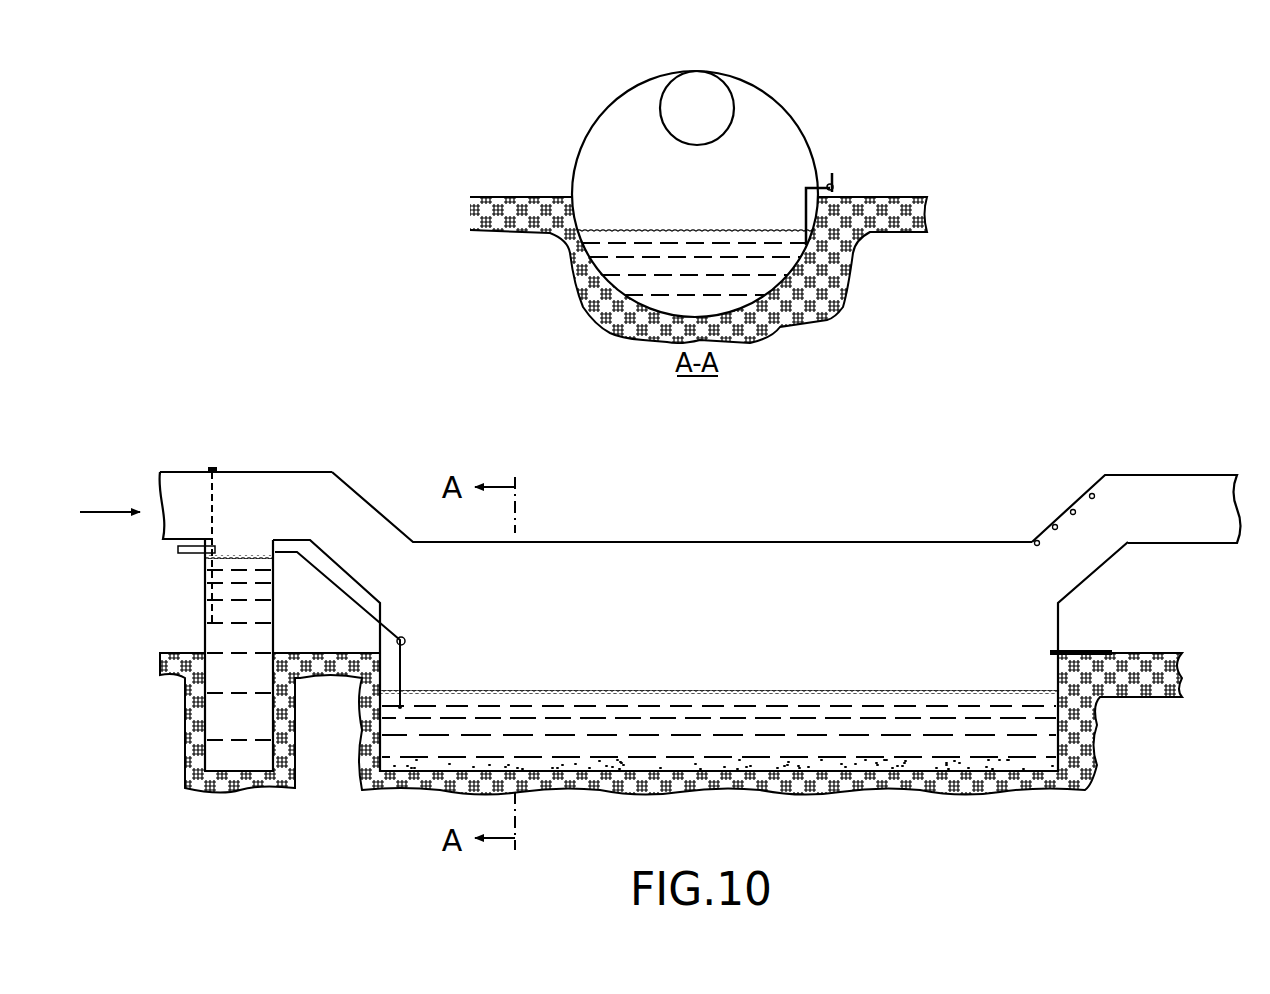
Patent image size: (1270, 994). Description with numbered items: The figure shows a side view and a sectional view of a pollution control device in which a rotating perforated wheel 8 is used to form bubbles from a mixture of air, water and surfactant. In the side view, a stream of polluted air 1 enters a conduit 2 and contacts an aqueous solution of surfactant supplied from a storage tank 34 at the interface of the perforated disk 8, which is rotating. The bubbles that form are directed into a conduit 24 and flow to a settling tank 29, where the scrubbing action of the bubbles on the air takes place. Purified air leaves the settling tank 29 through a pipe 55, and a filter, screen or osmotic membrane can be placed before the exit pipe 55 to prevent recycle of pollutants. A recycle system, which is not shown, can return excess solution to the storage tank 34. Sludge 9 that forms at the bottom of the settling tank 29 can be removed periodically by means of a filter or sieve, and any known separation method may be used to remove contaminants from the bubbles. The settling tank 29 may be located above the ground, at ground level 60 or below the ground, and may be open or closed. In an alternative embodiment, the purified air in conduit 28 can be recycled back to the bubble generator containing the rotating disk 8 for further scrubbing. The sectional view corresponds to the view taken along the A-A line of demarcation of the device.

The stream of polluted air 1 is at (100, 513).
The conduit 2 is at (186, 470).
The rotating perforated wheel 8 is at (217, 487).
The sludge 9 is at (717, 317).
The conduit 24 is at (682, 92).
The conduit 28 is at (1150, 475).
The settling tank 29 is at (633, 85).
The storage tank 34 is at (220, 687).
The pipe 55 is at (1090, 650).
The ground level 60 is at (497, 232).